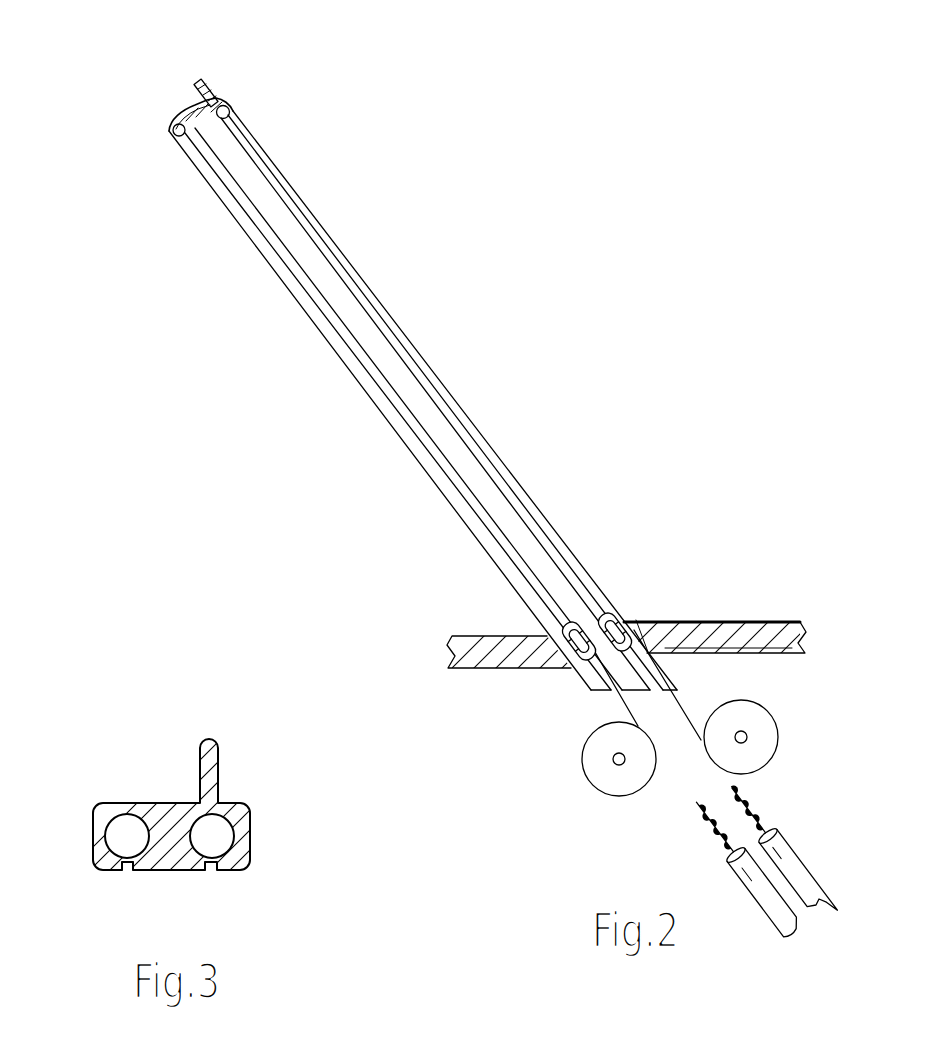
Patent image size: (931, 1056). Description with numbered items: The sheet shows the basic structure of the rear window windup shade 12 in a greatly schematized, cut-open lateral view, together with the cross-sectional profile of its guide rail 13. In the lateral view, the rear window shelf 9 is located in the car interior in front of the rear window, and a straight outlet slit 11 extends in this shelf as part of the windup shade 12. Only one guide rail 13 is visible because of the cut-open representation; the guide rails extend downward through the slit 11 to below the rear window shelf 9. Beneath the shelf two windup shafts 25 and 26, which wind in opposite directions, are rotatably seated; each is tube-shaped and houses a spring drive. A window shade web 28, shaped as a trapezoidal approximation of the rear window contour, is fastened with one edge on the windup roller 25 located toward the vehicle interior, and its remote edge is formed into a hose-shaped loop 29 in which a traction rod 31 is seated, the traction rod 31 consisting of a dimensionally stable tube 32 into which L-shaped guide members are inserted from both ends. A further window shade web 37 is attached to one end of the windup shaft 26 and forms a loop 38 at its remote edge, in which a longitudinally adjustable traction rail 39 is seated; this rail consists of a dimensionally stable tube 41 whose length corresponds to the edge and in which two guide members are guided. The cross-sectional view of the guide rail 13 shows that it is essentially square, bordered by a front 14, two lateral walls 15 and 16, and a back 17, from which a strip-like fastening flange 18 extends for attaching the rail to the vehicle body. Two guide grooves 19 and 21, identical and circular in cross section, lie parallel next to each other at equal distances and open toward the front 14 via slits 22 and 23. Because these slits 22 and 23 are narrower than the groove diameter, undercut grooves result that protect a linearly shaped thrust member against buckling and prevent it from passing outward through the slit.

In FIG. 2, the rear window shelf 9 is at (733, 628).
In FIG. 2, the outlet slit 11 is at (638, 620).
In FIG. 2, the rear window windup shade 12 is at (601, 316).
In FIG. 2, the guide rail 13 is at (423, 348).
In FIG. 3, the guide rail 13 is at (125, 770).
In FIG. 3, the front 14 is at (168, 870).
In FIG. 3, the lateral wall 15 is at (100, 841).
In FIG. 2, the lateral wall 16 is at (274, 116).
In FIG. 3, the lateral wall 16 is at (252, 841).
In FIG. 3, the back 17 is at (152, 803).
In FIG. 3, the fastening flange 18 is at (220, 765).
In FIG. 2, the guide groove 19 is at (193, 138).
In FIG. 3, the guide groove 19 is at (122, 836).
In FIG. 2, the guide groove 21 is at (258, 167).
In FIG. 3, the guide groove 21 is at (220, 832).
In FIG. 3, the slit 22 is at (127, 868).
In FIG. 3, the slit 23 is at (213, 868).
In FIG. 2, the windup shaft 25 is at (617, 778).
In FIG. 2, the windup shaft 26 is at (760, 728).
In FIG. 2, the window shade web 28 is at (620, 707).
In FIG. 2, the hose-shaped loop 29 is at (563, 632).
In FIG. 2, the traction rod 31 is at (573, 662).
In FIG. 2, the dimensionally stable tube 32 is at (576, 624).
In FIG. 2, the window shade web 37 is at (684, 716).
In FIG. 2, the loop 38 is at (608, 612).
In FIG. 2, the traction rail 39 is at (630, 620).
In FIG. 2, the dimensionally stable tube 41 is at (682, 624).